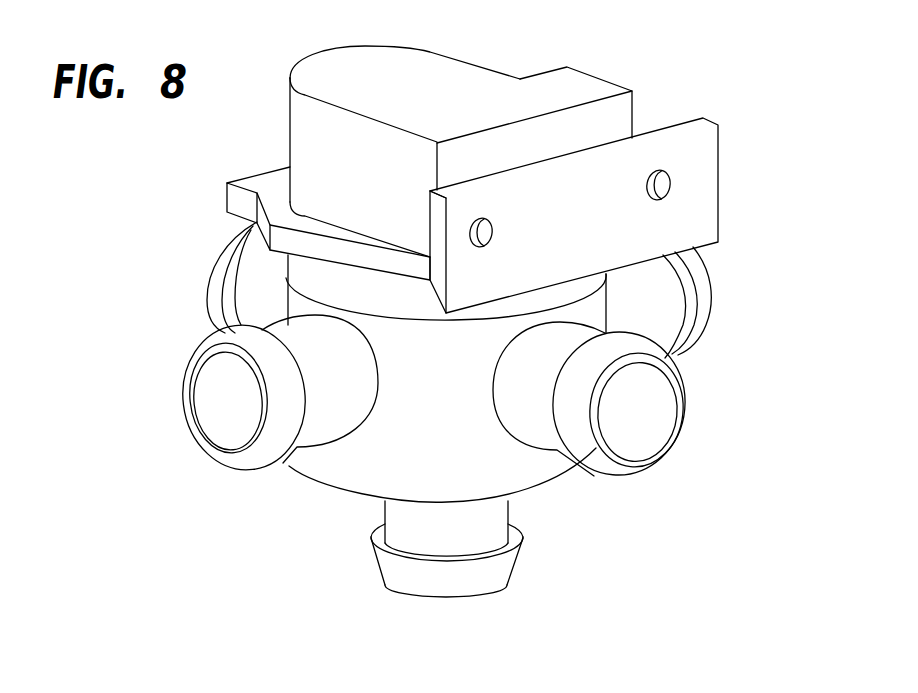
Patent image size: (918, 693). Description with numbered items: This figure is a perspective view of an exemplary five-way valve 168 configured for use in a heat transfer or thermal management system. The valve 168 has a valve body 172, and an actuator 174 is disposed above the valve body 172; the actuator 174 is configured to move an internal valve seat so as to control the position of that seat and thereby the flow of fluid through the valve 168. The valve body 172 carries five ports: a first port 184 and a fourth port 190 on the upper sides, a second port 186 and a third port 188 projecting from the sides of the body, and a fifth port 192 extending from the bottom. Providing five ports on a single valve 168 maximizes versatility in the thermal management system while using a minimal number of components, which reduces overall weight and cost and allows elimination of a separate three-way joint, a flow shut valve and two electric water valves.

The five-way valve 168 is at (664, 58).
The valve body 172 is at (357, 462).
The actuator 174 is at (418, 76).
The first port 184 is at (208, 281).
The second port 186 is at (183, 405).
The third port 188 is at (674, 438).
The fourth port 190 is at (710, 303).
The fifth port 192 is at (478, 594).